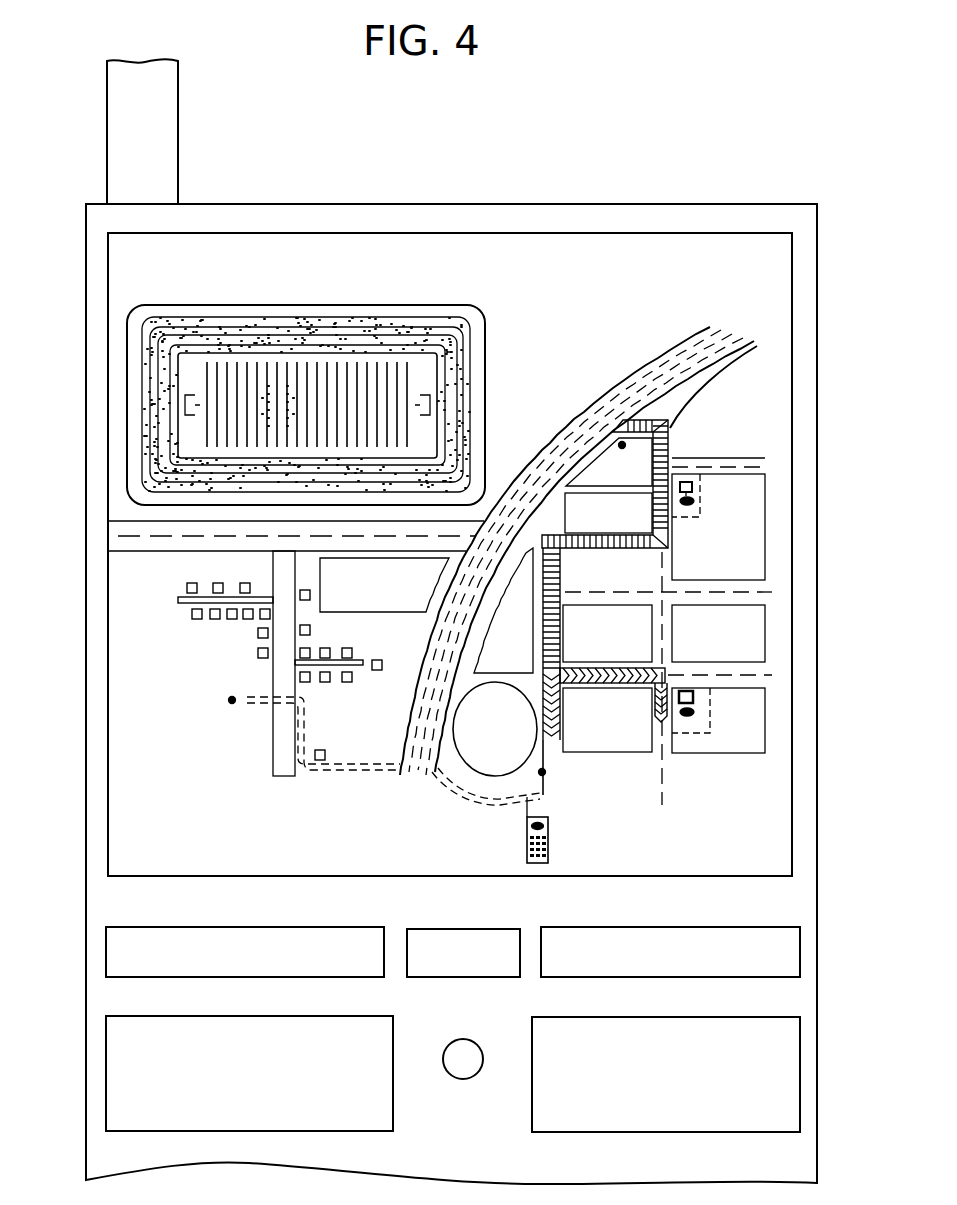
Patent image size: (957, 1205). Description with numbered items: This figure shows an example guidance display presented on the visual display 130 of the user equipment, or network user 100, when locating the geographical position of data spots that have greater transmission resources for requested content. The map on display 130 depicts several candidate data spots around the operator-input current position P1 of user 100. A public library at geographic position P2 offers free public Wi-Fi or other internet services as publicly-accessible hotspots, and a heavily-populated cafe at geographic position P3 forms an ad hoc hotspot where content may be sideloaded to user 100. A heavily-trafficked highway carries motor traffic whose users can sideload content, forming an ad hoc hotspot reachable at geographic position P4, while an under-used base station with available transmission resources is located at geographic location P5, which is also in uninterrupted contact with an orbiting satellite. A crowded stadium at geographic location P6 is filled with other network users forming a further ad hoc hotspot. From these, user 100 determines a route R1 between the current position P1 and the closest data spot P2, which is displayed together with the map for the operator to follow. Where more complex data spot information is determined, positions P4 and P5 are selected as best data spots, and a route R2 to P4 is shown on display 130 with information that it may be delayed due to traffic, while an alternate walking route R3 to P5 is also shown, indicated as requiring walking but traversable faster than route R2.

The network user 100 is at (85, 468).
The visual display 130 is at (814, 529).
The current position P1 is at (545, 773).
The geographic position of public library P2 is at (708, 727).
The geographic position of cafe P3 is at (700, 510).
The geographic position along highway P4 is at (622, 448).
The geographic location of base station P5 is at (230, 699).
The geographic location of stadium P6 is at (486, 456).
The route R1 is at (575, 684).
The route R2 is at (675, 438).
The walking route R3 is at (368, 769).